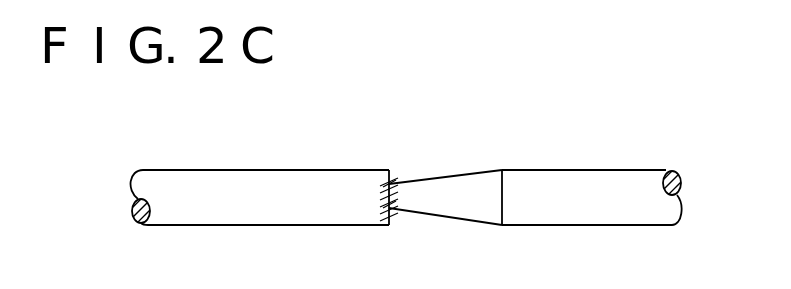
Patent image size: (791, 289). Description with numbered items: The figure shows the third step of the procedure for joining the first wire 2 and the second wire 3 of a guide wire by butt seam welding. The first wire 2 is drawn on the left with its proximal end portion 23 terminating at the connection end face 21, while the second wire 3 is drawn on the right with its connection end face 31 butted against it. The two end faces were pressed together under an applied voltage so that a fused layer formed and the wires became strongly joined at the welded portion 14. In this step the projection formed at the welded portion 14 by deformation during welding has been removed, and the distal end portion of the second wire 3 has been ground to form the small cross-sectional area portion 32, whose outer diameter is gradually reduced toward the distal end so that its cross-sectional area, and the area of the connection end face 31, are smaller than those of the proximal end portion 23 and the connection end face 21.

The first wire 2 is at (238, 170).
The second wire 3 is at (563, 170).
The welded portion 14 is at (392, 183).
The connection end face 21 is at (393, 186).
The proximal end portion 23 is at (338, 215).
The connection end face 31 is at (383, 203).
The small cross-sectional area portion 32 is at (463, 210).